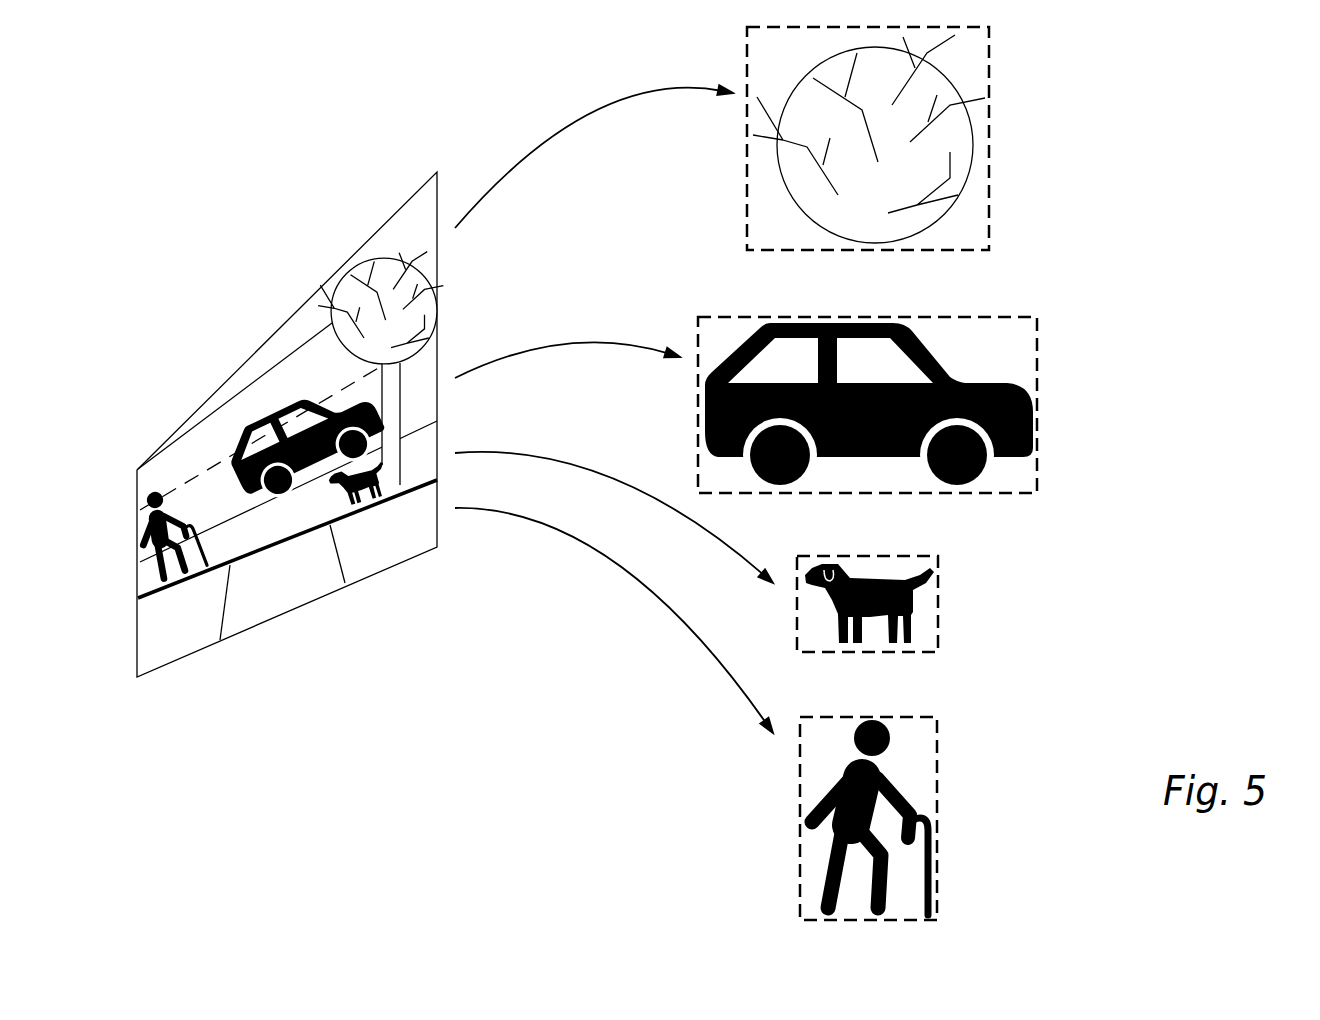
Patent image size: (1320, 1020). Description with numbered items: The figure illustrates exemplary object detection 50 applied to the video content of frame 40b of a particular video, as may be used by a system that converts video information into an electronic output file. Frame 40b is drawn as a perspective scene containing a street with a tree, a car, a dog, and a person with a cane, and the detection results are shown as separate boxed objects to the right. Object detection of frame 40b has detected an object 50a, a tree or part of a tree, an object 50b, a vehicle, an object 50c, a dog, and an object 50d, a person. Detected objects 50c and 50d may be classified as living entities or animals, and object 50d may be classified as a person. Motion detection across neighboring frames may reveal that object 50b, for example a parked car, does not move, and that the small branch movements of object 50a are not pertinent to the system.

The object detection 50 is at (1150, 76).
The frame 40b is at (400, 663).
The object (tree) 50a is at (1112, 236).
The object (vehicle) 50b is at (1153, 477).
The object (dog) 50c is at (1057, 636).
The object (person) 50d is at (1056, 904).